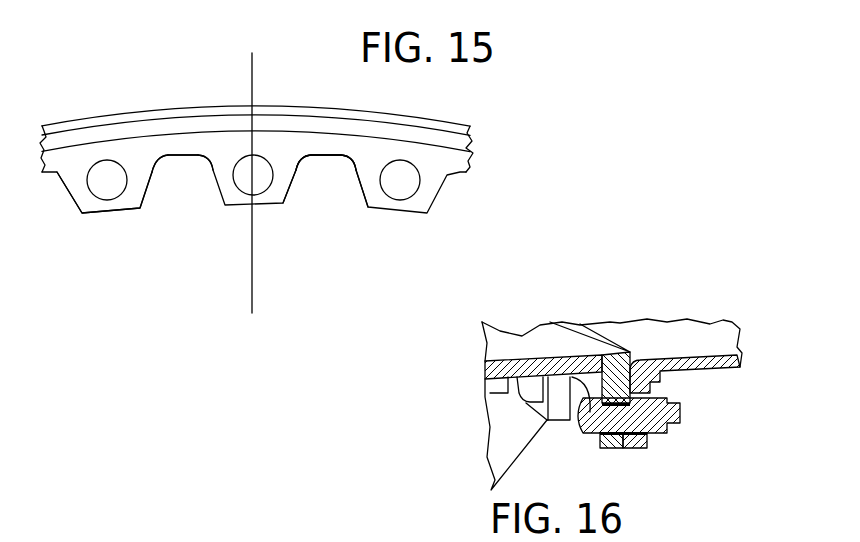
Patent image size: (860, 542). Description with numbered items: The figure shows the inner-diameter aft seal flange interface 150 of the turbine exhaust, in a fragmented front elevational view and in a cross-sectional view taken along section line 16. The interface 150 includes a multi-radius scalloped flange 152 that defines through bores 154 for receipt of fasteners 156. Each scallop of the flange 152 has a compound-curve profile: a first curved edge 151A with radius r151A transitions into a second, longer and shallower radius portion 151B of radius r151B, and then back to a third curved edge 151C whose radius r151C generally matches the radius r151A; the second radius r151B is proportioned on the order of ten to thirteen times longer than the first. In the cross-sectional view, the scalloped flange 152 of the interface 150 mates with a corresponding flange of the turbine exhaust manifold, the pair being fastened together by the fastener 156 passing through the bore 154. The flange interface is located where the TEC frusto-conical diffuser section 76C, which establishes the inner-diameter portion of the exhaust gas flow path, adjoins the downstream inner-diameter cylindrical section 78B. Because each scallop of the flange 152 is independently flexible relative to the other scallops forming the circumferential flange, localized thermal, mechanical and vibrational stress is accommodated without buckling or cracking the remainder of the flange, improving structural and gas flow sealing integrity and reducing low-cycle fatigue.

In FIG. 15, the ID aft seal flange interface 150 is at (118, 88).
In FIG. 16, the ID aft seal flange interface 150 is at (610, 357).
In FIG. 15, the first curved edge 151A is at (306, 169).
In FIG. 15, the second radius portion 151B is at (327, 159).
In FIG. 15, the third curved edge 151C is at (354, 164).
In FIG. 15, the scalloped flange 152 is at (97, 213).
In FIG. 15, the through bore 154 is at (288, 190).
In FIG. 15, the section line 16- 16 is at (225, 313).
In FIG. 15, the radius of first curved edge r151A is at (160, 170).
In FIG. 15, the radius of second radius portion r151B is at (177, 167).
In FIG. 15, the radius of third curved edge r151C is at (200, 171).
In FIG. 16, the ID cylindrical section 78B is at (727, 352).
In FIG. 16, the TEC frusto-conical diffuser section 76C is at (484, 381).
In FIG. 16, the fastener 156 is at (669, 426).